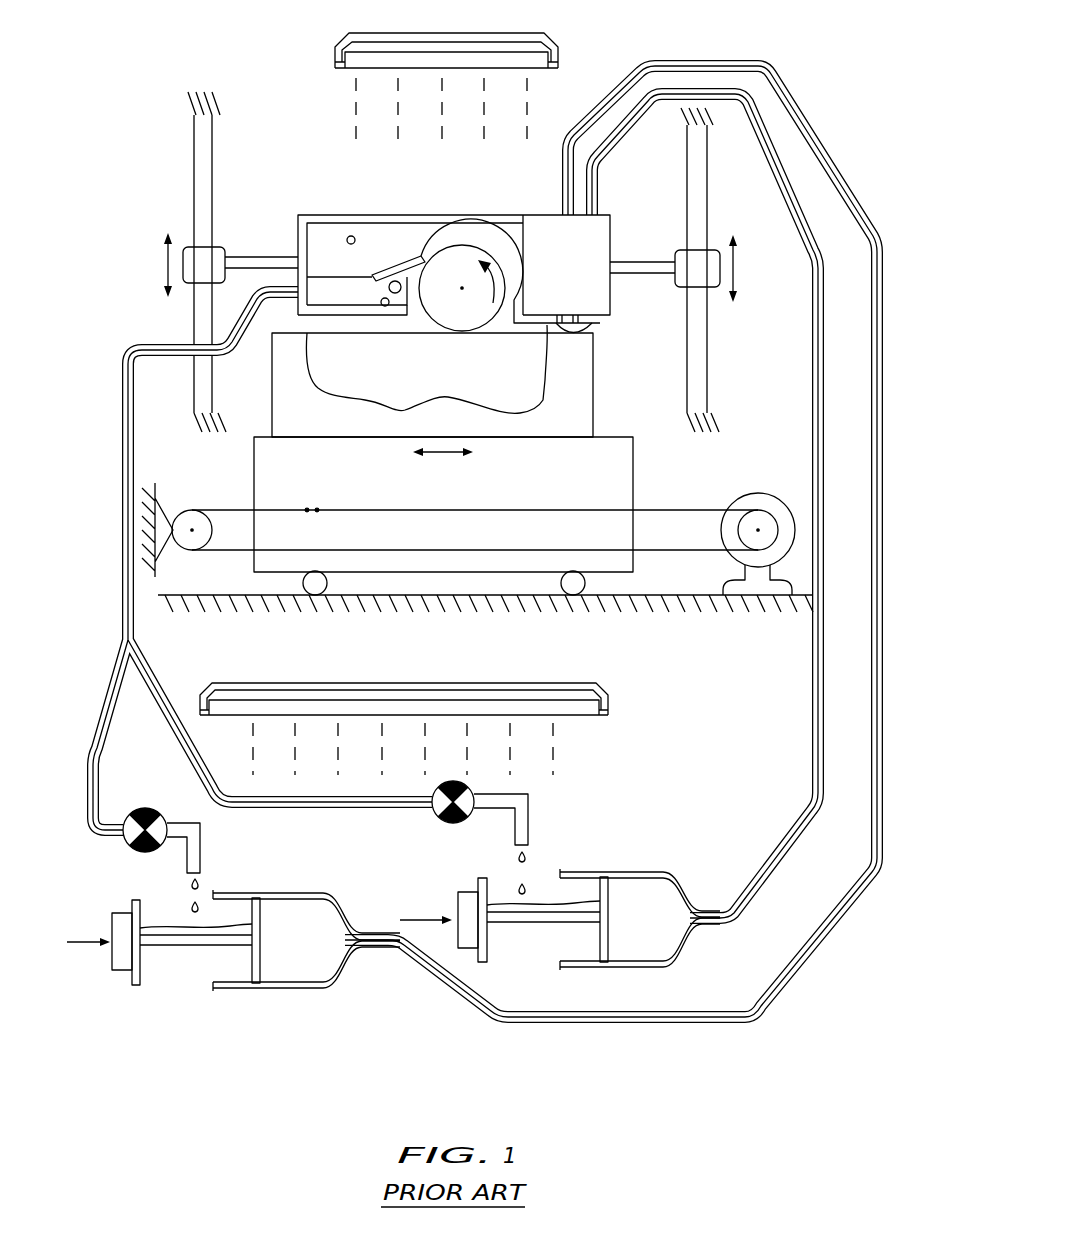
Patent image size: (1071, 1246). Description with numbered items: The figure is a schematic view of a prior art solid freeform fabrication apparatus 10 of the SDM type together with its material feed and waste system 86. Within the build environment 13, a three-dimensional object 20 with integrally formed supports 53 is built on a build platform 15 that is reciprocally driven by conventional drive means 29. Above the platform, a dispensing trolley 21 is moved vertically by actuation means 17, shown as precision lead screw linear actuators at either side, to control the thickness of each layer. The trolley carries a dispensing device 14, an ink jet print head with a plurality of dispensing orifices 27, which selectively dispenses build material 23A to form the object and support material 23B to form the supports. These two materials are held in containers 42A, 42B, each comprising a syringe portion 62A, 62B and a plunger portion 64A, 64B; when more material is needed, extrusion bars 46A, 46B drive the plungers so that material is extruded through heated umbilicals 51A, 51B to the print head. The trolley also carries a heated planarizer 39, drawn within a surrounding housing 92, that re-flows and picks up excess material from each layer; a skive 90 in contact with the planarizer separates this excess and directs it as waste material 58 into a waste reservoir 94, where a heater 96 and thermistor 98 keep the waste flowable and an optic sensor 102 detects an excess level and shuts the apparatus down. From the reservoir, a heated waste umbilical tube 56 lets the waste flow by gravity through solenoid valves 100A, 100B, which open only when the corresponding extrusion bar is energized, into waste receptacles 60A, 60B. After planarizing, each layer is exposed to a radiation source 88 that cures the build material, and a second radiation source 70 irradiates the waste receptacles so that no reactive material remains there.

The solid freeform fabrication apparatus 10 is at (340, 97).
The build environment 13 is at (464, 380).
The dispensing device 14 is at (597, 237).
The build platform 15 is at (477, 524).
The actuation means 17 is at (200, 232).
The three-dimensional object 20 is at (421, 368).
The dispensing trolley 21 is at (452, 233).
The build material 23A is at (658, 942).
The support material 23B is at (295, 973).
The dispensing orifices 27 is at (596, 326).
The drive means 29 is at (755, 502).
The heated planarizer 39 is at (472, 320).
The container 42A is at (559, 953).
The container 42B is at (233, 969).
The extrusion bar 46A is at (458, 905).
The extrusion bar 46B is at (120, 962).
The umbilical 51A is at (812, 700).
The umbilical 51B is at (820, 947).
The supports 53 is at (328, 427).
The heated waste umbilical tube 56 is at (121, 604).
The waste material 58 is at (381, 301).
The waste receptacle 60A is at (513, 892).
The waste receptacle 60B is at (158, 907).
The syringe portion 62A is at (680, 952).
The syringe portion 62B is at (340, 960).
The plunger portion 64A is at (487, 950).
The plunger portion 64B is at (153, 975).
The second radiation source 70 is at (546, 705).
The material feed and waste system 86 is at (247, 1037).
The radiation source 88 is at (494, 58).
The skive 90 is at (395, 281).
The housing shell 92 is at (463, 236).
The waste reservoir 94 is at (312, 233).
The heater 96 is at (397, 257).
The thermistor 98 is at (353, 280).
The solenoid valve 100A is at (470, 780).
The solenoid valve 100B is at (147, 808).
The optic sensor 102 is at (351, 236).